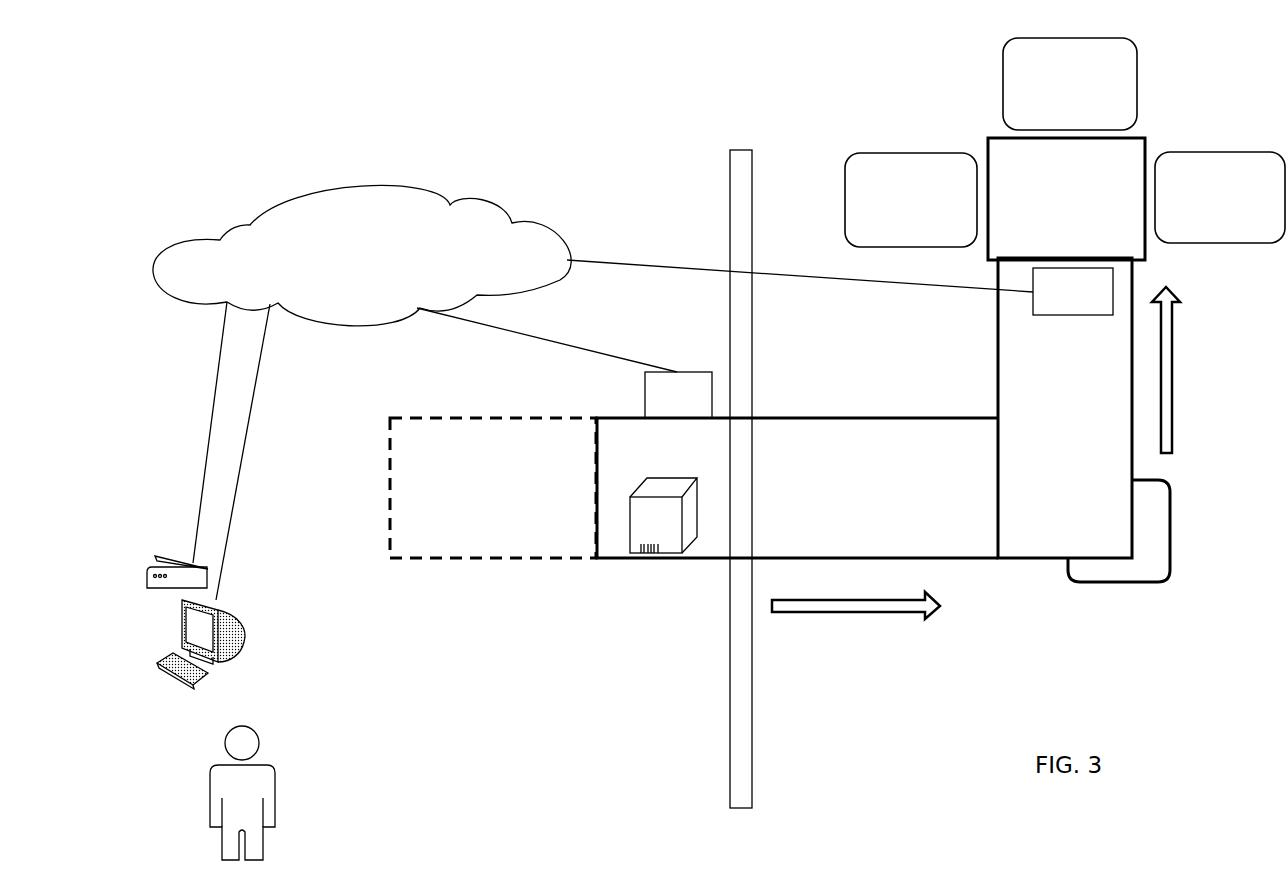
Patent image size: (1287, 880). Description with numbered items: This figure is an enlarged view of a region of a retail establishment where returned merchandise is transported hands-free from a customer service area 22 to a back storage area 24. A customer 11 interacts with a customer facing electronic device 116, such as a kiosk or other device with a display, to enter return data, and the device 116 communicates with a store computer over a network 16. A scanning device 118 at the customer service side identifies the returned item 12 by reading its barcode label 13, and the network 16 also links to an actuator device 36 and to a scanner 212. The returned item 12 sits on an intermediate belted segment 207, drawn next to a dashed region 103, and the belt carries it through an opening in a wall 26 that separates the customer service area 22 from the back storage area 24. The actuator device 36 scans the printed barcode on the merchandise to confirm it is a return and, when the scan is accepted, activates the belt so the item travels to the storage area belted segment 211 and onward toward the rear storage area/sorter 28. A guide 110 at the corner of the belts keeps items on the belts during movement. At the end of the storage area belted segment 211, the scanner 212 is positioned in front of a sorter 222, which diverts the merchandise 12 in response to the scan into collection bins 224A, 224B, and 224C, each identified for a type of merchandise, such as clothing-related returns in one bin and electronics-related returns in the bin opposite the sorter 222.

The customer 11 is at (275, 763).
The returned item 12 is at (637, 513).
The barcode label 13 is at (652, 556).
The network 16 is at (350, 274).
The customer service area 22 is at (607, 694).
The back storage area 24 is at (837, 690).
The wall 26 is at (728, 215).
The rear storage area/sorter 28 is at (923, 97).
The actuator device 36 is at (659, 412).
The staging area 103 is at (480, 496).
The guide 110 is at (1142, 590).
The customer facing electronic device 116 is at (242, 616).
The scanning device 118 is at (158, 556).
The intermediate belted segment 207 is at (878, 417).
The storage area belted segment 211 is at (995, 380).
The scanner 212 is at (1073, 291).
The sorter 222 is at (1090, 213).
The collection bin 224A is at (948, 208).
The collection bin 224B is at (1266, 215).
The collection bin 224C is at (1104, 101).